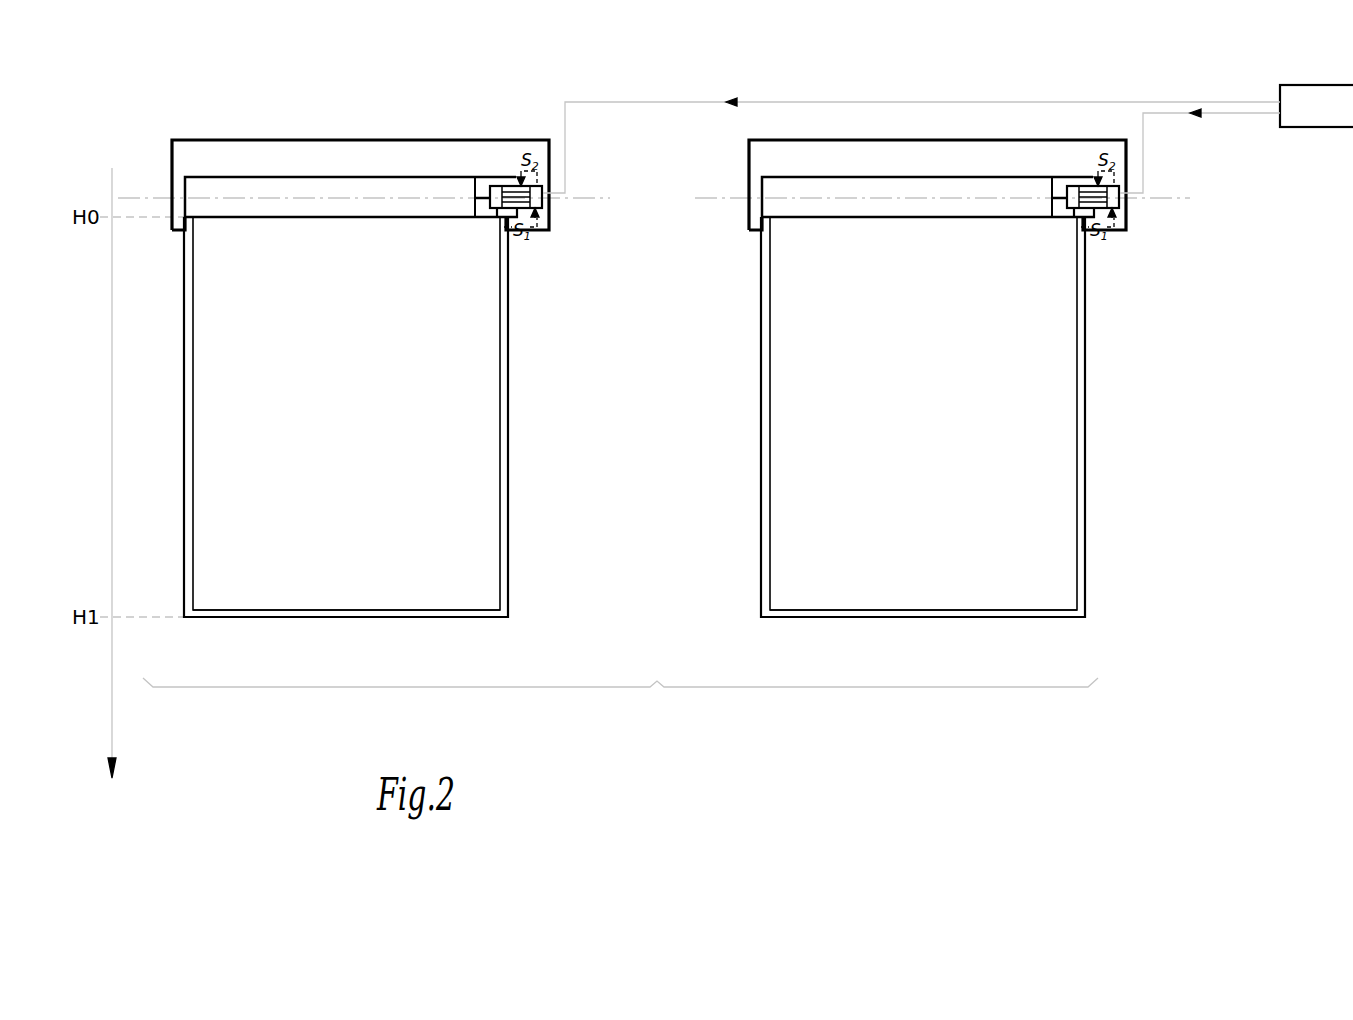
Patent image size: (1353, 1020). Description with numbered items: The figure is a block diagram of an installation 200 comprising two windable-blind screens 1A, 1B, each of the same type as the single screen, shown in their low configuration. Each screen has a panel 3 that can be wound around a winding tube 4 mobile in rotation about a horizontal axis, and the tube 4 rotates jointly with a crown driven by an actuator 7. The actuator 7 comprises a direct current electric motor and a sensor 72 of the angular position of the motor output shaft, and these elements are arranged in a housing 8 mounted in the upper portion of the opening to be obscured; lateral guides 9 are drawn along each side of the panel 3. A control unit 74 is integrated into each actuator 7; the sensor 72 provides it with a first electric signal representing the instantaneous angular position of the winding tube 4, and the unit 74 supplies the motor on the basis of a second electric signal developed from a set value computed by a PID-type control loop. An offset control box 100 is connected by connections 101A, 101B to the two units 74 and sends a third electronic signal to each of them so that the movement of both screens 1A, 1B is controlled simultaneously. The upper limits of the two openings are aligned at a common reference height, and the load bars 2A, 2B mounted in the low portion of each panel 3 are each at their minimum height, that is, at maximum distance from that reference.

The screen 1A is at (637, 417).
The screen 1B is at (1102, 545).
The load bar 2A is at (480, 618).
The load bar 2B is at (1057, 618).
The panel 3 is at (613, 507).
The winding tube 4 is at (253, 219).
The actuator 7 is at (513, 183).
The housing 8 is at (262, 140).
The guide rails 9 is at (185, 454).
The sensor 72 is at (490, 205).
The control unit 74 is at (543, 203).
The offset control box 100 is at (1316, 106).
The connection 101A is at (565, 143).
The connection 101B is at (1143, 172).
The installation 200 is at (620, 699).